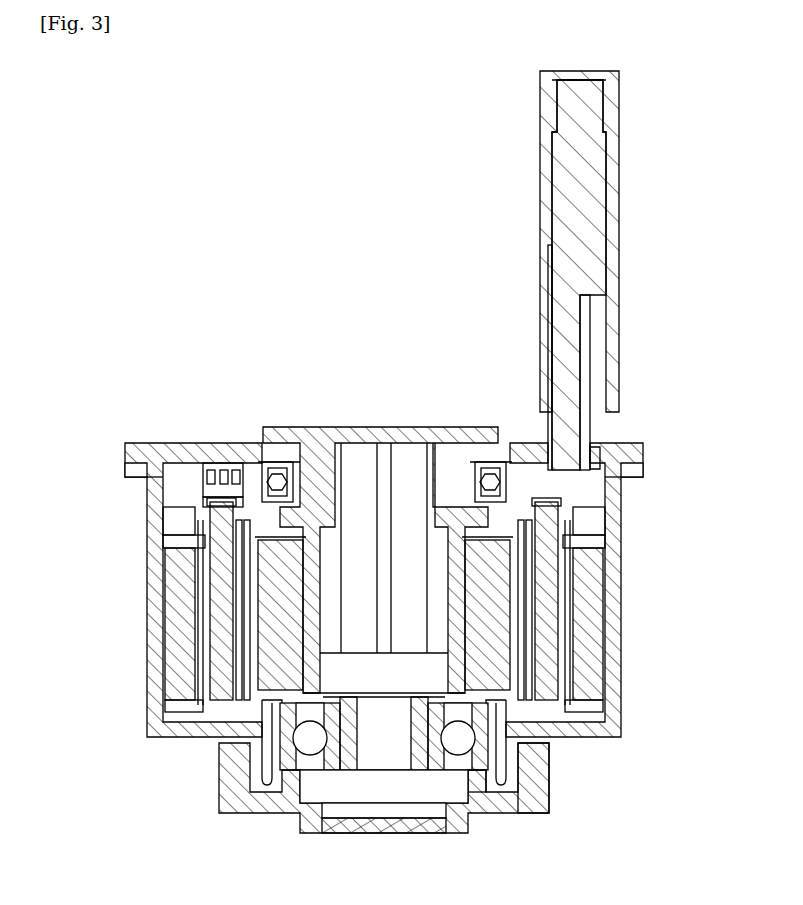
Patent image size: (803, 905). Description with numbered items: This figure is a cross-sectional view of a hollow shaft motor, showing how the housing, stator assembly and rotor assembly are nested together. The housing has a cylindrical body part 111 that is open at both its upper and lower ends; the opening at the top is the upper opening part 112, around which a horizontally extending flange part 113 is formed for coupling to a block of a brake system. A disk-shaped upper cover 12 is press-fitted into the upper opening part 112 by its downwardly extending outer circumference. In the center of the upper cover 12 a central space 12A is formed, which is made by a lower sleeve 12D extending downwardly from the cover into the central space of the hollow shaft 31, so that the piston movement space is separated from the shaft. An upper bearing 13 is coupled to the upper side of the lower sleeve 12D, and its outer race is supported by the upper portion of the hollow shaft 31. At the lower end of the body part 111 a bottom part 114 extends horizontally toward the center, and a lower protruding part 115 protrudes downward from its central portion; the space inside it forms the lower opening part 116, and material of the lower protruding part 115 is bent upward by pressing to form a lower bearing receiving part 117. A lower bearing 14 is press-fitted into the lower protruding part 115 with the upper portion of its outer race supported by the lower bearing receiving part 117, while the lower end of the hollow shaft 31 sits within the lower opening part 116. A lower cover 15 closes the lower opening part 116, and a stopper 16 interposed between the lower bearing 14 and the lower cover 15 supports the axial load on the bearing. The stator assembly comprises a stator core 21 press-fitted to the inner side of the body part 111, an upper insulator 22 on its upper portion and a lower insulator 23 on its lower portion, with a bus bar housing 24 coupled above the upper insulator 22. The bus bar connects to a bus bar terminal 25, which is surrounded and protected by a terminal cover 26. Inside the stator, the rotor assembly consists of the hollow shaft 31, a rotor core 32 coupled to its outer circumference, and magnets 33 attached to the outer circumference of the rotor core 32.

The upper cover 12 is at (380, 537).
The central space 12A is at (384, 511).
The lower sleeve 12D is at (477, 613).
The upper bearing 13 is at (384, 441).
The lower bearing 14 is at (338, 747).
The lower cover 15 is at (383, 812).
The stopper 16 is at (370, 826).
The stator core 21 is at (342, 612).
The upper insulator 22 is at (341, 527).
The lower insulator 23 is at (150, 703).
The bus bar housing 24 is at (223, 448).
The bus bar terminal 25 is at (616, 275).
The terminal cover 26 is at (612, 241).
The hollow shaft 31 is at (330, 599).
The rotor core 32 is at (313, 610).
The magnets 33 is at (311, 610).
The body part 111 is at (412, 590).
The upper opening part 112 is at (626, 424).
The flange part 113 is at (420, 454).
The bottom part 114 is at (560, 772).
The lower protruding part 115 is at (430, 792).
The lower opening part 116 is at (475, 816).
The lower bearing receiving part 117 is at (620, 679).